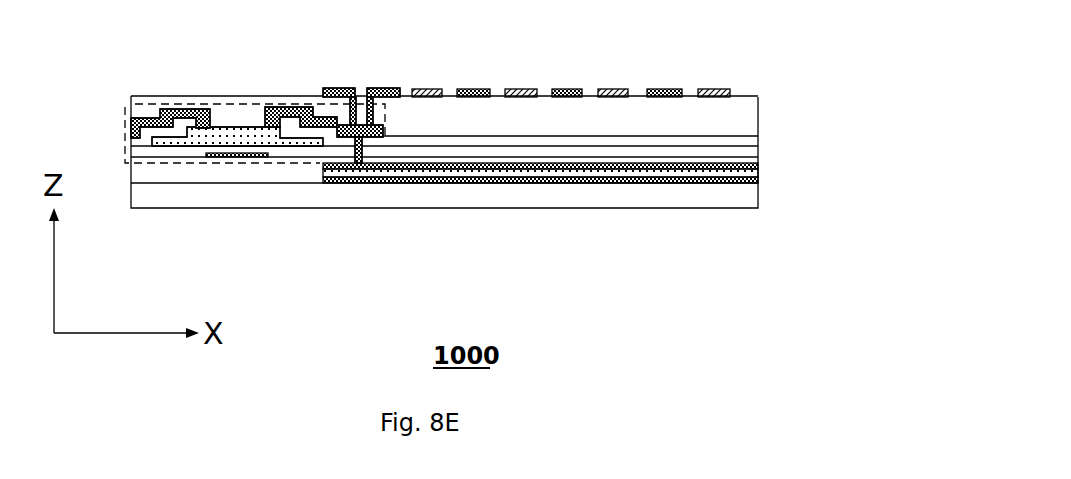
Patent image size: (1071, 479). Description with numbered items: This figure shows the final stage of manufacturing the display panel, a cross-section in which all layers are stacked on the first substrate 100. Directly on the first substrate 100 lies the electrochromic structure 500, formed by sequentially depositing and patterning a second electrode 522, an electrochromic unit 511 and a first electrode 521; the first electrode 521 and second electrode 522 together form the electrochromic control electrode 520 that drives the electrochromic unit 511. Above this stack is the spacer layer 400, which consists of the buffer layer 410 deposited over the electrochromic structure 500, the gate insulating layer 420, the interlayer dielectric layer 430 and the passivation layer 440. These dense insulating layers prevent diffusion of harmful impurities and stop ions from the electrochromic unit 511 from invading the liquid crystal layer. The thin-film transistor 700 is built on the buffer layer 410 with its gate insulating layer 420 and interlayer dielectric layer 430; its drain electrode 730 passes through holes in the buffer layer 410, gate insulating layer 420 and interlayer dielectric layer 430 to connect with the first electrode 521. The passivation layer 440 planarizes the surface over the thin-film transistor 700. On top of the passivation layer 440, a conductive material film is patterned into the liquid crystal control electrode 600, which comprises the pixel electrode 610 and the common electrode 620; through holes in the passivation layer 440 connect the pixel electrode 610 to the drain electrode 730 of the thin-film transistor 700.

The first substrate 100 is at (368, 195).
The spacer layer 400 is at (509, 135).
The buffer layer 410 is at (481, 174).
The gate insulating layer 420 is at (740, 151).
The interlayer dielectric layer 430 is at (722, 140).
The passivation layer 440 is at (722, 123).
The electrochromic structure 500 is at (556, 237).
The electrochromic unit 511 is at (617, 172).
The electrochromic control electrode 520 is at (540, 237).
The first electrode 521 is at (540, 168).
The second electrode 522 is at (527, 180).
The liquid crystal control electrode 600 is at (646, 51).
The pixel electrode 610 is at (670, 90).
The common electrode 620 is at (712, 90).
The thin-film transistor 700 is at (220, 171).
The drain electrode 730 is at (338, 132).